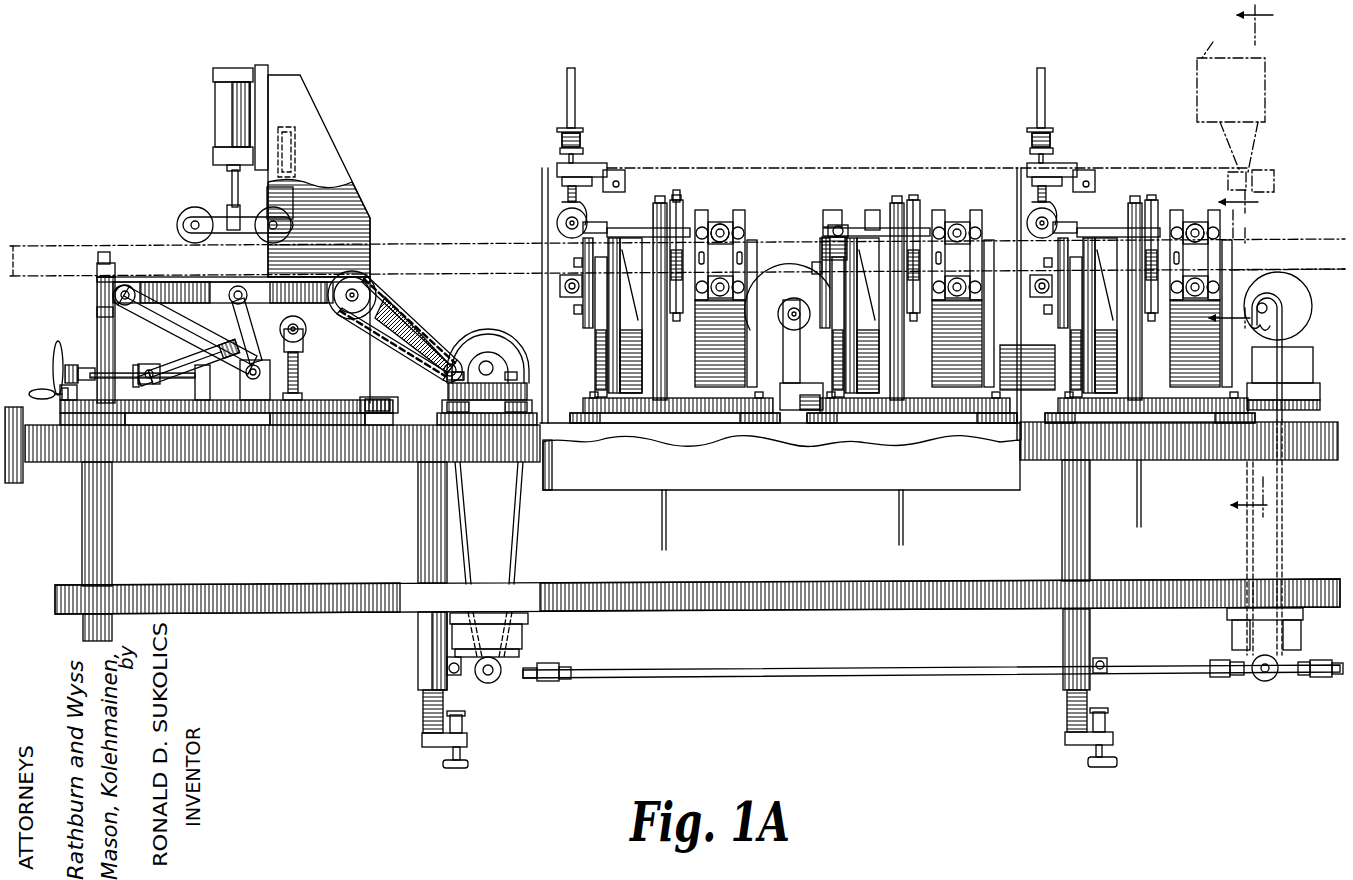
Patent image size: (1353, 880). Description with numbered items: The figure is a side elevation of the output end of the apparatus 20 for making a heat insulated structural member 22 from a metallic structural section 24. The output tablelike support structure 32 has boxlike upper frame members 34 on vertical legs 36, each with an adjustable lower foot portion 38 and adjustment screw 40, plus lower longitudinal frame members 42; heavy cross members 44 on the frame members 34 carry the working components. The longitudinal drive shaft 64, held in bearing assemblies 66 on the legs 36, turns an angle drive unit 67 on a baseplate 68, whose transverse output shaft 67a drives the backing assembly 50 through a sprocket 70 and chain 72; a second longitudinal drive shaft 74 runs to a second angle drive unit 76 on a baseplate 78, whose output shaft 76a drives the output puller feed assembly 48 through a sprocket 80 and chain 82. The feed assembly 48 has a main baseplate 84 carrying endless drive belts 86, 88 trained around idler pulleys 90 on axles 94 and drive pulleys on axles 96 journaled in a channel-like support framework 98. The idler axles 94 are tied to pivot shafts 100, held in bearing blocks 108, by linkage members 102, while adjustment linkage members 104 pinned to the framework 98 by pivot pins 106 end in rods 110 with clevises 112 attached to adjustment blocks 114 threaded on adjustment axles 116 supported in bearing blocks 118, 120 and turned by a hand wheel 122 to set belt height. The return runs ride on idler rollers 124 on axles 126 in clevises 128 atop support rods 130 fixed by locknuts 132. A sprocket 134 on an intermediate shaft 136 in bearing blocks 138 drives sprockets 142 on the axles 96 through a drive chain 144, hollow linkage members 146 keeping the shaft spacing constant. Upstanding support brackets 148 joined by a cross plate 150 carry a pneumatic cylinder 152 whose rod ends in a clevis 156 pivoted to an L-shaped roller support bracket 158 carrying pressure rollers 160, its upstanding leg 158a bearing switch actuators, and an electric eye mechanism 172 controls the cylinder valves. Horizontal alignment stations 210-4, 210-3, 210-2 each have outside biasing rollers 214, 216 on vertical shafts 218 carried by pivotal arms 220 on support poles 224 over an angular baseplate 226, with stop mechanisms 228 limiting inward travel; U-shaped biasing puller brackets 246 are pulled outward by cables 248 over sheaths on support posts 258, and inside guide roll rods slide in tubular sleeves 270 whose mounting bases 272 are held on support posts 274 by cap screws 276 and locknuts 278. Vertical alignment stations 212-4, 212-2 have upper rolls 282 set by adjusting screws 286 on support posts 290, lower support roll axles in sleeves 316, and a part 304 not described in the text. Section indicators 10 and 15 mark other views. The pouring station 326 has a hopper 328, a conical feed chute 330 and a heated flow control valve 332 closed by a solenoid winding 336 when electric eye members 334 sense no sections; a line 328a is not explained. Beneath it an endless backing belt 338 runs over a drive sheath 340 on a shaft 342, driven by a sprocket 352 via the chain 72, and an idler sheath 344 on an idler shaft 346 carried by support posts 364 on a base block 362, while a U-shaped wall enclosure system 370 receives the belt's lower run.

The section line 10 is at (1256, 272).
The section line 15 is at (1236, 270).
The apparatus 20 is at (772, 752).
The structural member 22 is at (33, 245).
The elongated metallic structural section 24 is at (38, 268).
The tablelike support structure 32 is at (607, 575).
The upper frame member 34 is at (1215, 462).
The vertical leg 36 is at (82, 562).
The adjustable lower foot portion 38 is at (422, 707).
The adjustment screw 40 is at (462, 747).
The longitudinal frame member 42 is at (790, 562).
The cross member 44 is at (82, 420).
The output puller feed assembly 48 is at (148, 95).
The backing assembly 50 is at (1303, 303).
The longitudinal drive shaft 64 is at (1340, 672).
The transverse bearing assembly 66 is at (447, 656).
The angle drive unit 67 is at (1232, 640).
The transverse output shaft 67a is at (1262, 682).
The baseplate 68 is at (1227, 615).
The sprocket 70 is at (1298, 650).
The chain 72 is at (1283, 566).
The second longitudinal drive shaft 74 is at (930, 672).
The second angle drive unit 76 is at (527, 648).
The transverse output shaft 76a is at (495, 688).
The baseplate 78 is at (527, 618).
The sprocket 80 is at (480, 583).
The chain 82 is at (512, 560).
The main baseplate 84 is at (50, 395).
The endless drive belt 86 is at (152, 277).
The endless drive belt 88 is at (219, 213).
The idler pulley 90 is at (125, 280).
The axle 94 is at (118, 292).
The axle 96 is at (352, 290).
The channel-like support framework 98 is at (178, 290).
The pivot shaft 100 is at (255, 360).
The linkage member 102 is at (110, 298).
The adjustment linkage member 104 is at (217, 303).
The pivot pin 106 is at (238, 292).
The bearing block 108 is at (258, 400).
The rod 110 is at (175, 350).
The clevis 112 is at (170, 368).
The adjustment block 114 is at (148, 390).
The threaded adjustment axle 116 is at (120, 370).
The bearing block 118 is at (200, 385).
The bearing block 120 is at (75, 355).
The hand wheel 122 is at (52, 355).
The idler roller 124 is at (306, 330).
The axle 126 is at (293, 317).
The clevis 128 is at (303, 344).
The adjustment support rod 130 is at (298, 373).
The locknut 132 is at (300, 400).
The sprocket 134 is at (480, 335).
The intermediate shaft 136 is at (488, 360).
The bearing block 138 is at (447, 378).
The sprocket 142 is at (395, 320).
The drive chain 144 is at (372, 340).
The hollow linkage member 146 is at (440, 320).
The upstanding support bracket 148 is at (335, 170).
The cross plate 150 is at (258, 66).
The pneumatic cylinder 152 is at (214, 88).
The clevis 156 is at (232, 205).
The L-shaped roller support bracket 158 is at (228, 215).
The upstanding leg 158a is at (295, 125).
The pressure roller 160 is at (185, 215).
The electric eye mechanism 172 is at (103, 252).
The close horizontal alignment station 210-4 is at (738, 158).
The close horizontal alignment station 210-3 is at (940, 158).
The close horizontal alignment station 210-2 is at (1135, 158).
The close vertical alignment station 212-4 is at (600, 82).
The close vertical alignment station 212-2 is at (1070, 82).
The outside biasing roller 214 is at (677, 318).
The outside biasing roller 216 is at (628, 290).
The vertical shaft 218 is at (678, 200).
The arm 220 is at (655, 200).
The upstanding support pole 224 is at (590, 330).
The angular baseplate 226 is at (670, 415).
The adjustable stop mechanism 228 is at (830, 210).
The U-shaped biasing puller bracket 246 is at (672, 205).
The cable 248 is at (664, 550).
The vertical support post 258 is at (600, 360).
The tubular sleeve 270 is at (840, 226).
The rectangular mounting base 272 is at (704, 215).
The upstanding support post 274 is at (745, 425).
The cap screw 276 is at (745, 222).
The locknut 278 is at (722, 222).
The upper roll 282 is at (560, 225).
The adjusting screw 286 is at (565, 135).
The upstanding support post 290 is at (568, 212).
The block 304 is at (560, 165).
The sleeve 316 is at (560, 280).
The pouring station 326 is at (1310, 55).
The hopper 328 is at (1193, 38).
The line 328a is at (1272, 220).
The conical feed chute 330 is at (1250, 130).
The flow control valve 332 is at (1228, 178).
The electric eye member 334 is at (1240, 263).
The solenoid winding 336 is at (1262, 172).
The endless backing belt 338 is at (817, 266).
The drive sheath 340 is at (1284, 327).
The shaft 342 is at (1252, 282).
The idler sheath 344 is at (790, 272).
The idler shaft 346 is at (786, 312).
The sprocket 352 is at (1258, 345).
The base block 362 is at (808, 412).
The upstanding support post 364 is at (790, 390).
The U-shaped wall enclosure system 370 is at (1010, 347).